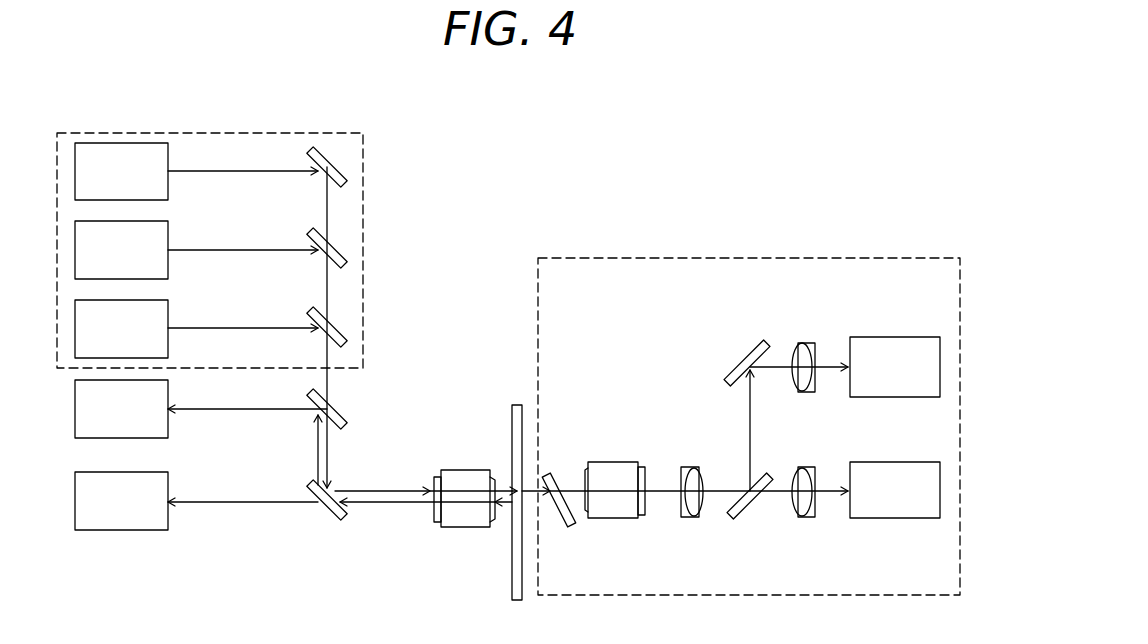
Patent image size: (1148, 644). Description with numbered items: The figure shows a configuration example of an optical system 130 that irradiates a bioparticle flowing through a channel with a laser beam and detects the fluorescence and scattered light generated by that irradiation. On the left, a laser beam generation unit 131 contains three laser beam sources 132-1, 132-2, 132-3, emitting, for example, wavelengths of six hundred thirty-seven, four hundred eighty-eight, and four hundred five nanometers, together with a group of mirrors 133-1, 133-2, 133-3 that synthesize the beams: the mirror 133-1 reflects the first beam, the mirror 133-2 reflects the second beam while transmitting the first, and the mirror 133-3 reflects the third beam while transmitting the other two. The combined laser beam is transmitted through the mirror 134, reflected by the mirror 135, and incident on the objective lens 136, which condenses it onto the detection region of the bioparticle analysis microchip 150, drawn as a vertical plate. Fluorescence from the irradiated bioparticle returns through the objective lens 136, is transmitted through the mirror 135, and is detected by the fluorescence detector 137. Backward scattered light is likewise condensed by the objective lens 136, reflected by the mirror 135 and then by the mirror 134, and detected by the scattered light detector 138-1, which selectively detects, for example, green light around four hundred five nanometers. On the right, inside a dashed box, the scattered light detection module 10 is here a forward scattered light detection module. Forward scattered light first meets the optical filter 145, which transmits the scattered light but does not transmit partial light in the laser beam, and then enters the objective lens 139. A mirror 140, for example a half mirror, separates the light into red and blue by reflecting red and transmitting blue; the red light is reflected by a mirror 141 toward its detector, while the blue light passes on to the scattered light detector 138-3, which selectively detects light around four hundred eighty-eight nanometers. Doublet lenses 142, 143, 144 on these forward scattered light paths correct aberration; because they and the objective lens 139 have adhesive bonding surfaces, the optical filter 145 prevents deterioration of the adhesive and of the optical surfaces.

The scattered light detection module 10 is at (538, 278).
The optical system 130 is at (745, 170).
The laser beam generation unit 131 is at (363, 168).
The laser beam source 132-1 is at (168, 185).
The laser beam source 132-2 is at (168, 268).
The laser beam source 132-3 is at (168, 346).
The mirror 133-1 is at (310, 154).
The mirror 133-2 is at (310, 235).
The mirror 133-3 is at (310, 314).
The mirror 134 is at (350, 420).
The mirror 135 is at (345, 525).
The objective lens 136 is at (466, 527).
The fluorescence detector 137 is at (120, 530).
The scattered light detector 138-1 is at (168, 427).
The scattered light detector 138-3 is at (900, 518).
The objective lens 139 is at (613, 518).
The mirror 140 is at (750, 520).
The mirror 141 is at (758, 340).
The doublet lens 142 is at (803, 465).
The doublet lens 143 is at (803, 343).
The doublet lens 144 is at (690, 465).
The optical filter 145 is at (560, 512).
The bioparticle analysis microchip 150 is at (518, 405).